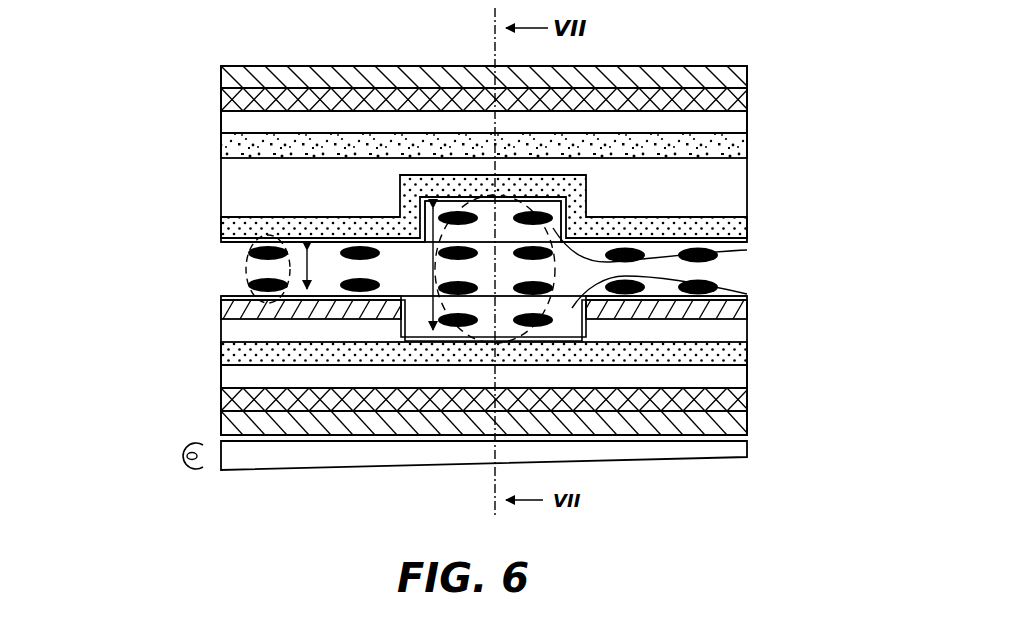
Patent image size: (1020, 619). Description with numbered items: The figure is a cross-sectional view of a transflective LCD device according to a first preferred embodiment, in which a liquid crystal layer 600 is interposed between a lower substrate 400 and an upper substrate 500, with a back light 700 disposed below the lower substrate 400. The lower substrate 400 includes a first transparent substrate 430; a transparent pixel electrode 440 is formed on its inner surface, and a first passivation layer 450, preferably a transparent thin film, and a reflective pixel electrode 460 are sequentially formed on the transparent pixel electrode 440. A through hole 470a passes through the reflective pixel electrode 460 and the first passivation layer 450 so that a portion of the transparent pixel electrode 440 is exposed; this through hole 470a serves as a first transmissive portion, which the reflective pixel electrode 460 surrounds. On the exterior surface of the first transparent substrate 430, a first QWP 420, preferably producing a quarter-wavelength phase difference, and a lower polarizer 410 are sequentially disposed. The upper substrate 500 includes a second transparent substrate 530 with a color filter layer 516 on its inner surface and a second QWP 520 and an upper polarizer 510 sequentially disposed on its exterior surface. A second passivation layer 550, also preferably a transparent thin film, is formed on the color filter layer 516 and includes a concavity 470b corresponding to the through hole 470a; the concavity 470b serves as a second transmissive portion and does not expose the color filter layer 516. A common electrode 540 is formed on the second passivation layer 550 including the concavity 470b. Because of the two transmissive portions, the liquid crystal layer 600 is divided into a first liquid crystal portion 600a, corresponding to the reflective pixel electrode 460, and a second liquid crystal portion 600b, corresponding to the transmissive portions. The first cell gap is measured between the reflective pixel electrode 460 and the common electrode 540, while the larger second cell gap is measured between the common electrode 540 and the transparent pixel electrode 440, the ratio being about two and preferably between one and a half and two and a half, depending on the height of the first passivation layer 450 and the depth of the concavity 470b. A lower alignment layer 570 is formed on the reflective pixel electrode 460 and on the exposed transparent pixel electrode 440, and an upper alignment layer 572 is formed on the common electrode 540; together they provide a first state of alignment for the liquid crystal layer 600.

The upper substrate 500 is at (215, 66).
The upper polarizer 510 is at (748, 78).
The second QWP 520 is at (748, 100).
The second transparent substrate 530 is at (748, 122).
The color filter layer 516 is at (748, 148).
The second passivation layer 550 is at (748, 197).
The common electrode 540 is at (748, 230).
The upper alignment layer 572 is at (215, 240).
The lower alignment layer 570 is at (215, 297).
The liquid crystal layer 600 is at (215, 242).
The first liquid crystal portion 600a is at (263, 291).
The second liquid crystal portion 600b is at (460, 327).
The through hole 470a is at (718, 287).
The concavity 470b is at (718, 255).
The lower substrate 400 is at (215, 297).
The reflective pixel electrode 460 is at (748, 316).
The first passivation layer 450 is at (748, 345).
The transparent pixel electrode 440 is at (748, 377).
The first transparent substrate 430 is at (748, 401).
The first QWP 420 is at (748, 424).
The lower polarizer 410 is at (748, 449).
The back light 700 is at (705, 455).